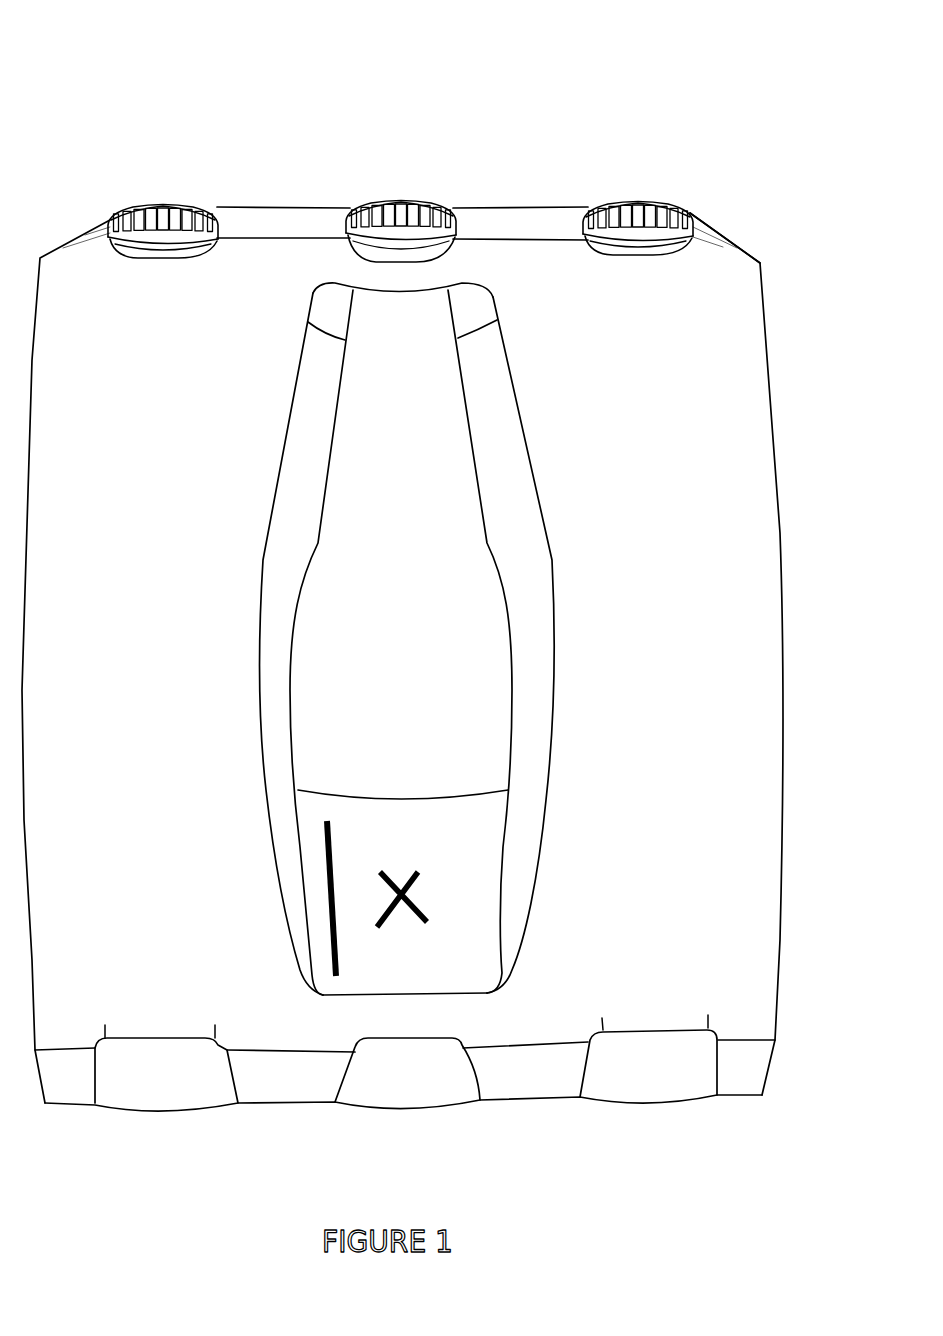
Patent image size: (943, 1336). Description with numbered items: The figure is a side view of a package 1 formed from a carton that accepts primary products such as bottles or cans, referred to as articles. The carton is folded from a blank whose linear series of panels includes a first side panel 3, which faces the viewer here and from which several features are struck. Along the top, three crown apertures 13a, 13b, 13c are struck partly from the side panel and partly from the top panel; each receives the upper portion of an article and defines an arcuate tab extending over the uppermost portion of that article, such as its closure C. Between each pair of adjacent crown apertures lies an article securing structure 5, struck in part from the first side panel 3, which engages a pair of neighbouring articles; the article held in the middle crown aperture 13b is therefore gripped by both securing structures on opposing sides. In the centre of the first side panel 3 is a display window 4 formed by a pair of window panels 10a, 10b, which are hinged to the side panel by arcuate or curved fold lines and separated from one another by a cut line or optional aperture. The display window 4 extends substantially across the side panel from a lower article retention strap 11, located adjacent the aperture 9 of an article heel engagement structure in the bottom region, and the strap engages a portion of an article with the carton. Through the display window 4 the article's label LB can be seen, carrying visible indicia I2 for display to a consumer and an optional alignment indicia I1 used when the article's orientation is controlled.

The package 1 is at (402, 561).
The first side panel 3 is at (142, 663).
The display window 4 is at (455, 745).
The article securing structure 5 is at (490, 222).
The aperture 9 is at (676, 1051).
The window panel 10a is at (503, 450).
The window panel 10b is at (307, 477).
The lower article retention strap 11 is at (447, 1017).
The crown aperture 13a is at (173, 193).
The crown aperture 13b is at (407, 189).
The crown aperture 13c is at (647, 196).
The closure C is at (670, 210).
The label LB is at (462, 991).
The alignment indicia I1 is at (332, 972).
The visible indicia I2 is at (402, 912).